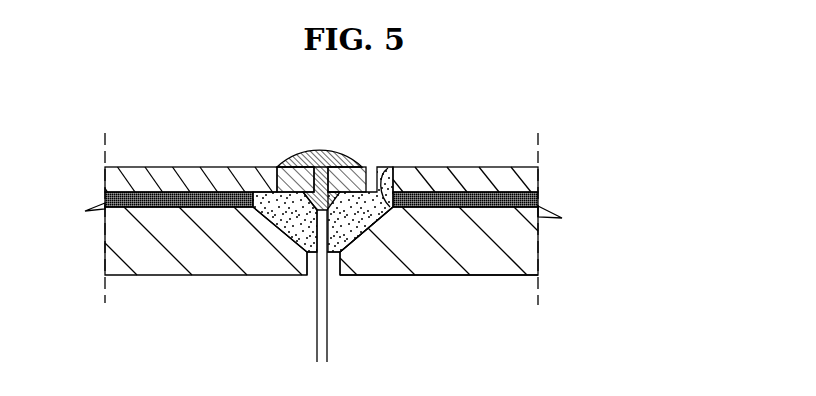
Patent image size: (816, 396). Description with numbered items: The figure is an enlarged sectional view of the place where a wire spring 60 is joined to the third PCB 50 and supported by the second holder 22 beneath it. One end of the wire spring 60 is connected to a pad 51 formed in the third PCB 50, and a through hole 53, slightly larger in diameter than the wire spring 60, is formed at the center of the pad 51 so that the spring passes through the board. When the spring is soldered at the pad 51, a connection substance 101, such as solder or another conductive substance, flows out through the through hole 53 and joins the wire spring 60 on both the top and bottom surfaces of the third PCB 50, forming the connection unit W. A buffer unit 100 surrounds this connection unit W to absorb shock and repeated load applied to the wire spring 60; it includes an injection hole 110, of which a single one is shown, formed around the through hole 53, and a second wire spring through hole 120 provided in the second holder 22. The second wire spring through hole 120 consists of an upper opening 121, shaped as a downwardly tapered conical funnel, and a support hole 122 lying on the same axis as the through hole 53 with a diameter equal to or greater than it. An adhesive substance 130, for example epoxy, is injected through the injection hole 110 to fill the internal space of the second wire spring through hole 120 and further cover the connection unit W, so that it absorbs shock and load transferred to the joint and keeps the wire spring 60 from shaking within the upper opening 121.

The second holder 22 is at (510, 250).
The third PCB 50 is at (477, 168).
The pad 51 is at (277, 167).
The through hole 53 is at (322, 160).
The connection unit W is at (304, 149).
The wire spring 60 is at (318, 334).
The buffer unit 100 is at (502, 307).
The connection substance 101 is at (357, 166).
The injection hole 110 is at (427, 220).
The second wire spring through hole 120 is at (400, 315).
The upper opening 121 is at (362, 220).
The support hole 122 is at (340, 277).
The adhesive substance 130 is at (375, 217).